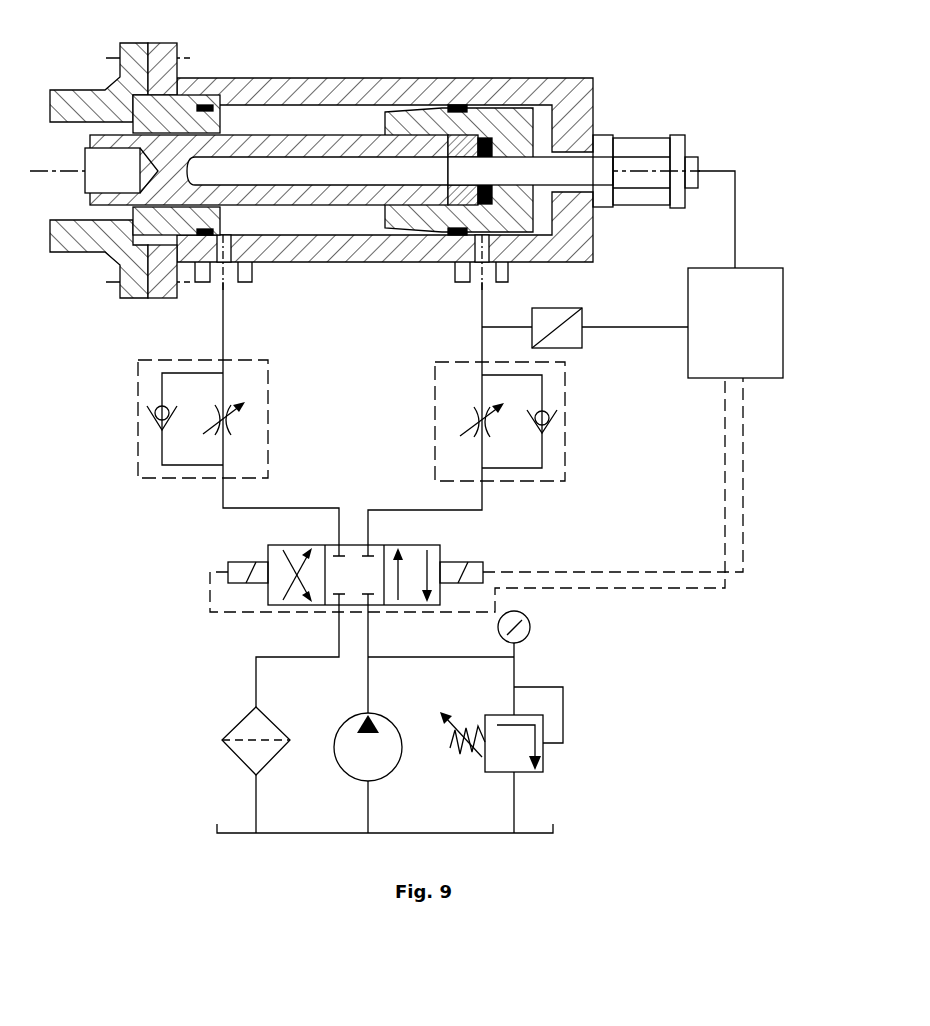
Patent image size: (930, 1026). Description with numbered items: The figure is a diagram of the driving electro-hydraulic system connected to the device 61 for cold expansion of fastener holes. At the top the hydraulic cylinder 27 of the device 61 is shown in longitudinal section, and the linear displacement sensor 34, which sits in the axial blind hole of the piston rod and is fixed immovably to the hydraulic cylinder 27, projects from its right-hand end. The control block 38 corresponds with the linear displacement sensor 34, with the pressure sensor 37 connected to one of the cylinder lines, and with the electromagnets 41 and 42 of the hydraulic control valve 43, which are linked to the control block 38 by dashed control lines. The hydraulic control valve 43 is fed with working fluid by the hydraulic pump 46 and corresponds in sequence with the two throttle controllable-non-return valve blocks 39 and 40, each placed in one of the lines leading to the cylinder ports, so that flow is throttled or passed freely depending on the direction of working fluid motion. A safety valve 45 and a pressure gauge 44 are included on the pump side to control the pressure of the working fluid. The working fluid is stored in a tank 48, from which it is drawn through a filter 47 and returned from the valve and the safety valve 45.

The hydraulic cylinder 27 is at (348, 90).
The device 61 is at (446, 68).
The linear displacement sensor 34 is at (641, 160).
The pressure sensor 37 is at (582, 320).
The control block 38 is at (783, 328).
The throttle controllable-non-return valve block 39 is at (565, 434).
The throttle controllable-non-return valve block 40 is at (138, 433).
The electromagnet 41 is at (478, 562).
The electromagnet 42 is at (240, 562).
The hydraulic control valve 43 is at (377, 545).
The pressure gauge 44 is at (531, 622).
The safety valve 45 is at (543, 761).
The hydraulic pump 46 is at (337, 732).
The filter 47 is at (230, 728).
The tank 48 is at (556, 830).